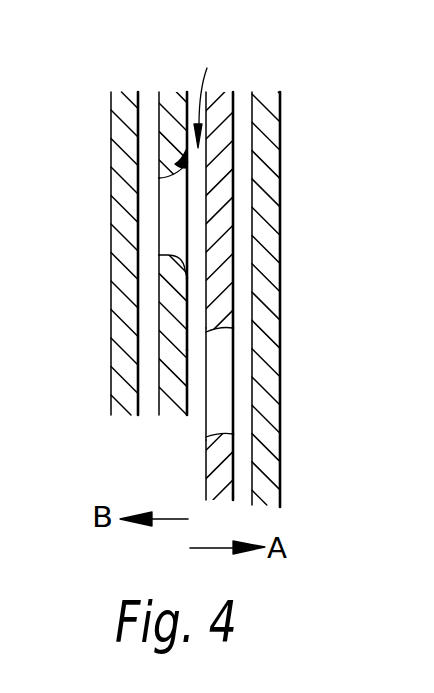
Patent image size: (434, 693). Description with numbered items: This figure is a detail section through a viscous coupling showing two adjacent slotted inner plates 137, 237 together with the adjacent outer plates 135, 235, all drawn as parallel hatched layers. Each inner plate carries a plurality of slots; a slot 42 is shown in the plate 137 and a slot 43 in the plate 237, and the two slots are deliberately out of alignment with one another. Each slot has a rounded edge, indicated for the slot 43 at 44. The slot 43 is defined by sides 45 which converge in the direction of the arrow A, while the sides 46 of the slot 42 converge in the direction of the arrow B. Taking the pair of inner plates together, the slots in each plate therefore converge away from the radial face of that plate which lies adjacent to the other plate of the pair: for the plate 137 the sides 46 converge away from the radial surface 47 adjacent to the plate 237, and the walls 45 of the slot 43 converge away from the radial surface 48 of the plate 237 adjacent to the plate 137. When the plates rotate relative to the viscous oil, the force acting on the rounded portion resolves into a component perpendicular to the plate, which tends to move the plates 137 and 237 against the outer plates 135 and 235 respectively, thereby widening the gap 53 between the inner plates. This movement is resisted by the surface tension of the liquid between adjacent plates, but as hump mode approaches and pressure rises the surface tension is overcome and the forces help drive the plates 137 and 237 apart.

The outer plate 135 is at (120, 108).
The inner plate 137 is at (173, 100).
The gap 53 is at (208, 91).
The inner plate 237 is at (220, 107).
The outer plate 235 is at (267, 115).
The sides of slot 46 is at (159, 178).
The slot 42 is at (172, 209).
The rounded edge 44 is at (205, 335).
The radial surface 47 is at (183, 384).
The sides of slot 45 is at (233, 340).
The slot 43 is at (226, 378).
The radial surface 48 is at (207, 482).